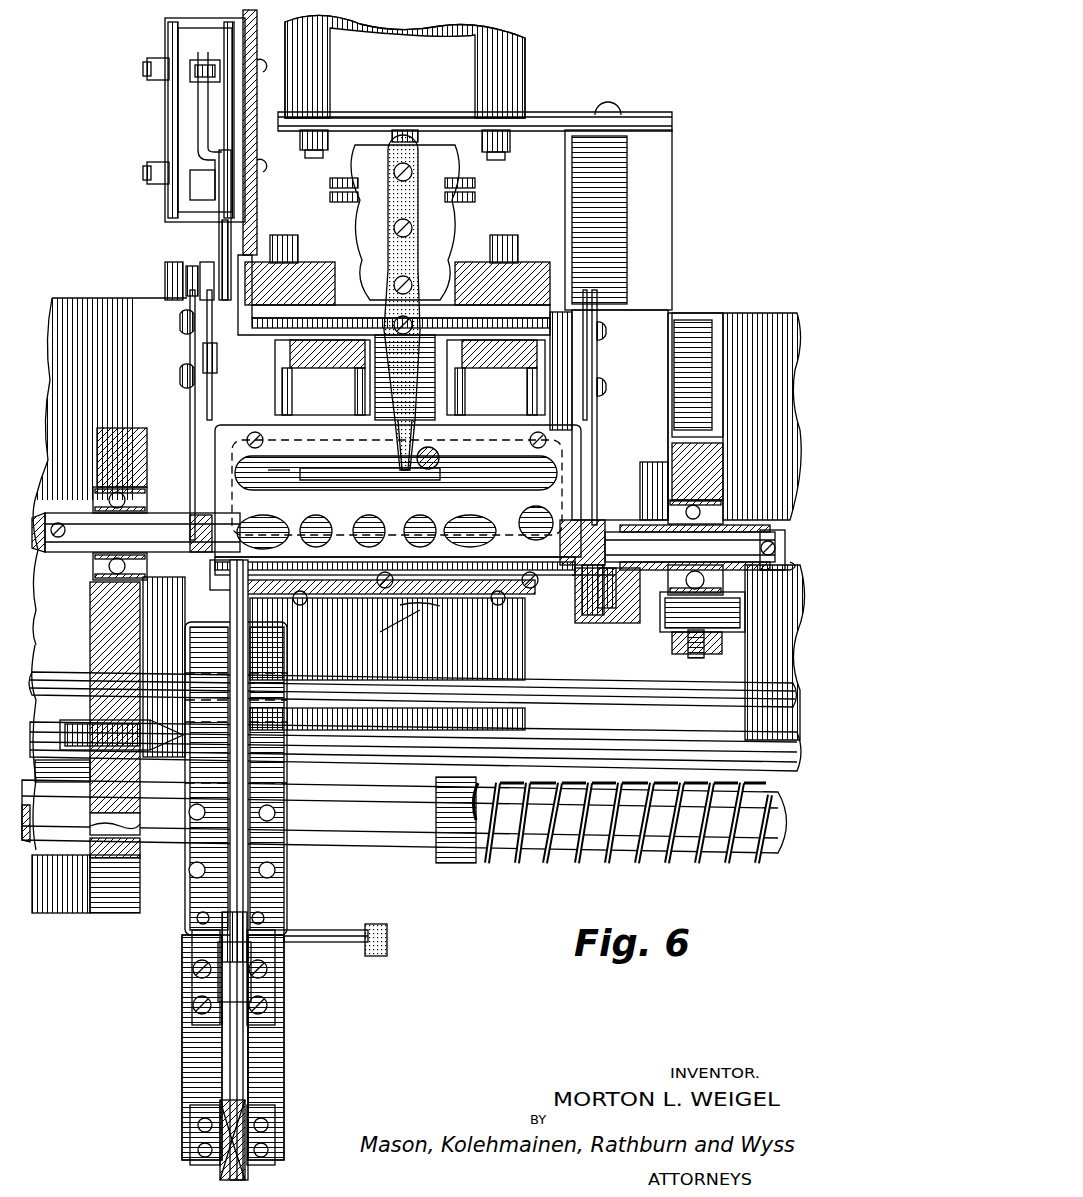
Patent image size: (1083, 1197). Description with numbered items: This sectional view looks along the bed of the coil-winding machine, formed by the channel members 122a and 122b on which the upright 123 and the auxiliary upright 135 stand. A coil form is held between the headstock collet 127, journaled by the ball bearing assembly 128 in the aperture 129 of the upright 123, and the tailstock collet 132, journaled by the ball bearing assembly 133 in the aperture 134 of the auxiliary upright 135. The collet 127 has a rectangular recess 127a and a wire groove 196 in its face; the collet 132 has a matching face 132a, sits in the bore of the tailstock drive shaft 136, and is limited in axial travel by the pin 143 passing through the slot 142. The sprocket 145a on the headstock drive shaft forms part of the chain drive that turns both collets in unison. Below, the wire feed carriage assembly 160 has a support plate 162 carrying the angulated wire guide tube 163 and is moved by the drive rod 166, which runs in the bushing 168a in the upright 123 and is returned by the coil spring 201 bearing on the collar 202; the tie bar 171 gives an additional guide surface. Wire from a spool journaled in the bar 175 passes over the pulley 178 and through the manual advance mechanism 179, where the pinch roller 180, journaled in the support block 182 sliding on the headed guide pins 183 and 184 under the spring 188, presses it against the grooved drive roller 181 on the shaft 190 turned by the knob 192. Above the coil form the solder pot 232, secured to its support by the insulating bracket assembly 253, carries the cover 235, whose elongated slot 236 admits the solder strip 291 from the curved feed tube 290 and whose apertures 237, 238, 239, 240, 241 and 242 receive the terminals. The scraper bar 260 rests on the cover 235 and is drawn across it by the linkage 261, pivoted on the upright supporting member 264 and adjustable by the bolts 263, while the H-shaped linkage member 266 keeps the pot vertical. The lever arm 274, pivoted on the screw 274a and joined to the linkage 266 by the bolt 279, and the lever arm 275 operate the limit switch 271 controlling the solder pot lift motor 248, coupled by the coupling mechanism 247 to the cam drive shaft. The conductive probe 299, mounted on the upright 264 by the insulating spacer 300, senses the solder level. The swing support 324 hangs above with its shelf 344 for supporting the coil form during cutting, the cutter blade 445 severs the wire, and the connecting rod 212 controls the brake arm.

The limit switch 271 is at (183, 40).
The lever arm 275 is at (200, 170).
The lever arm 274 is at (218, 236).
The screw 274a is at (165, 275).
The motor 248 is at (518, 62).
The coupling mechanism 247 is at (478, 190).
The insulating spacer 300 is at (392, 206).
The upright supporting member 264 is at (522, 272).
The swing support 324 is at (345, 345).
The shelf 344 is at (272, 378).
The conductive probe 299 is at (408, 440).
The solder strip 291 is at (440, 457).
The cover 235 is at (236, 434).
The elongated slot 236 is at (290, 482).
The aperture 237 is at (282, 467).
The feed tube 290 is at (442, 474).
The headstock collet 127 is at (205, 504).
The recess 127a is at (268, 522).
The aperture 238 is at (328, 508).
The aperture 239 is at (382, 508).
The aperture 240 is at (436, 508).
The aperture 241 is at (488, 508).
The aperture 242 is at (526, 512).
The solder pot 232 is at (372, 598).
The scraper bar 260 is at (448, 606).
The insulating bracket assembly 253 is at (405, 627).
The groove 196 is at (222, 585).
The ball bearing assembly 128 is at (120, 470).
The aperture 129 is at (62, 546).
The sprocket 145a is at (92, 566).
The bolts 263 is at (180, 322).
The bolt 279 is at (203, 356).
The linkage 261 is at (190, 404).
The H-shaped linkage member 266 is at (575, 362).
The tailstock collet 132 is at (600, 522).
The face 132a is at (560, 540).
The slot 142 is at (712, 543).
The ball bearing assembly 133 is at (712, 508).
The aperture 134 is at (718, 524).
The auxiliary upright 135 is at (718, 372).
The channel member 122b is at (772, 325).
The channel member 122a is at (778, 628).
The pin 143 is at (762, 540).
The tailstock drive shaft 136 is at (760, 575).
The cutter blade 445 is at (575, 612).
The connecting rod 212 is at (483, 662).
The tie bar 171 is at (582, 734).
The drive rod 166 is at (420, 840).
The collar 202 is at (443, 865).
The coil spring 201 is at (575, 862).
The wire guide tube 163 is at (245, 658).
The support plate 162 is at (265, 1047).
The bushing 168a is at (95, 848).
The bar 175 is at (46, 905).
The upright 123 is at (95, 905).
The wire feed carriage assembly 160 is at (160, 1068).
The drive roller 181 is at (242, 912).
The manual wire advance mechanism 179 is at (178, 989).
The spring 188 is at (205, 958).
The headed guide pin 183 is at (195, 975).
The headed guide pin 184 is at (268, 970).
The support block 182 is at (267, 990).
The pinch roller 180 is at (228, 1000).
The pulley 178 is at (220, 1175).
The shaft 190 is at (308, 928).
The knob 192 is at (375, 958).